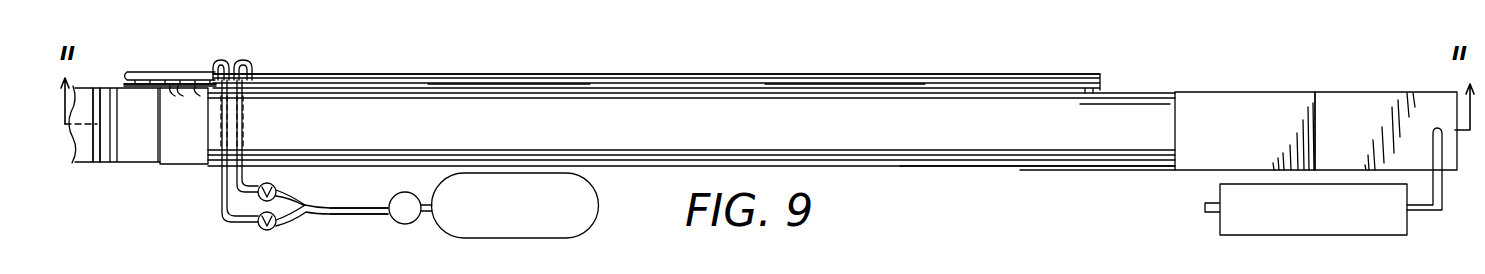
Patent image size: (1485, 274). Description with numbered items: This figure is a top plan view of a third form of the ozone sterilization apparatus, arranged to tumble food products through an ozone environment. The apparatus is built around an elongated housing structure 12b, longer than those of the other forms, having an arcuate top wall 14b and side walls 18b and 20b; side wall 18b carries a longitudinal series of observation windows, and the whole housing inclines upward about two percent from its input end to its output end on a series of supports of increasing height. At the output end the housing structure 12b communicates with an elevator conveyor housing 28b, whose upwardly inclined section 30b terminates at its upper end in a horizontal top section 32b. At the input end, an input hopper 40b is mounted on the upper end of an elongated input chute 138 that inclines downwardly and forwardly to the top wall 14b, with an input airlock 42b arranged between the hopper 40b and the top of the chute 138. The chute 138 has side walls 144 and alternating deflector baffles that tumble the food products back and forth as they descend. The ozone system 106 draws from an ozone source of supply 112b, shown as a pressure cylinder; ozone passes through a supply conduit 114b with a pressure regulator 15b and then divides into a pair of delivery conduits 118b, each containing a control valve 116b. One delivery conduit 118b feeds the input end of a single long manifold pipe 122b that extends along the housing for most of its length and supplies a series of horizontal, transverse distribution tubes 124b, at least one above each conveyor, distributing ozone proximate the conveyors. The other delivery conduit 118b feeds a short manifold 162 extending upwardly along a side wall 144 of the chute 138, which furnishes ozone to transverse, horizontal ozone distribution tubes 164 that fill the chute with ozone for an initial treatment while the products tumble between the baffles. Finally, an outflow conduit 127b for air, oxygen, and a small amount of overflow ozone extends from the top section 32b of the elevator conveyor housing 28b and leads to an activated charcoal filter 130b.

The elongated housing structure 12b is at (915, 175).
The top wall 14b is at (822, 128).
The side wall 18b is at (1006, 168).
The side wall 20b is at (1000, 90).
The elevator conveyor housing 28b is at (1292, 82).
The upwardly inclined section 30b is at (1208, 92).
The horizontal top section 32b is at (1378, 92).
The input hopper 40b is at (135, 166).
The input airlock 42b is at (108, 150).
The ozone treatment apparatus 106 is at (628, 70).
The ozone source of supply 112b is at (548, 238).
The supply conduit 114b is at (352, 214).
The control valve 116b is at (278, 184).
The delivery conduits 118b is at (225, 60).
The manifold pipe 122b is at (358, 74).
The distribution tubes 124b is at (590, 84).
The exhaust conduit 127b is at (1435, 208).
The activated charcoal filter 130b is at (1380, 236).
The input chute 138 is at (181, 172).
The side walls 144 is at (176, 80).
The manifold 162 is at (144, 75).
The ozone distribution tubes 164 is at (188, 88).
The regulator 15b is at (410, 224).